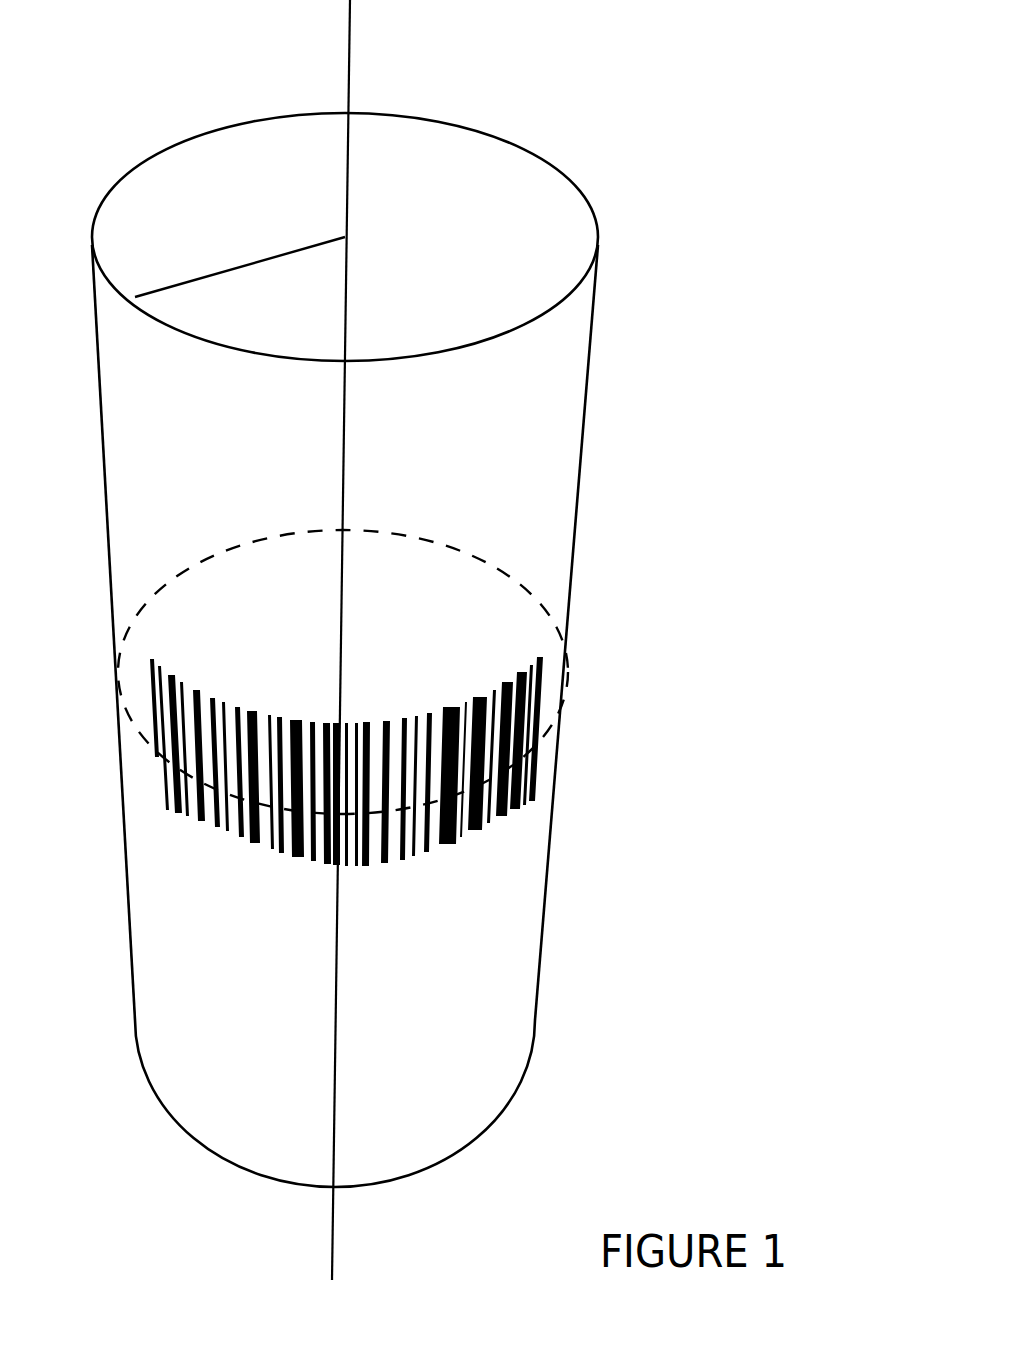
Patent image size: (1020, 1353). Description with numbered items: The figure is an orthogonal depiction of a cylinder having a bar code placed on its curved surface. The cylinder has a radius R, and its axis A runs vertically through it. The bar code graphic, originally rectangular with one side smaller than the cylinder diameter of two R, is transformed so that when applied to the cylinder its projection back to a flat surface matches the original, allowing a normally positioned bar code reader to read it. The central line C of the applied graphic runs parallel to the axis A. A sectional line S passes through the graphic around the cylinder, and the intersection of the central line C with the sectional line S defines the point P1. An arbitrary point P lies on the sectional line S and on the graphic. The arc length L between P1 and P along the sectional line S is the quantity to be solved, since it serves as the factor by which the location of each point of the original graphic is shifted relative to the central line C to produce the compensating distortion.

The axis A is at (367, 640).
The radius R is at (240, 259).
The sectional line S is at (343, 662).
The central line C is at (352, 716).
The arbitrary point P is at (490, 780).
The arc length L is at (440, 814).
The intersection P1 is at (346, 814).